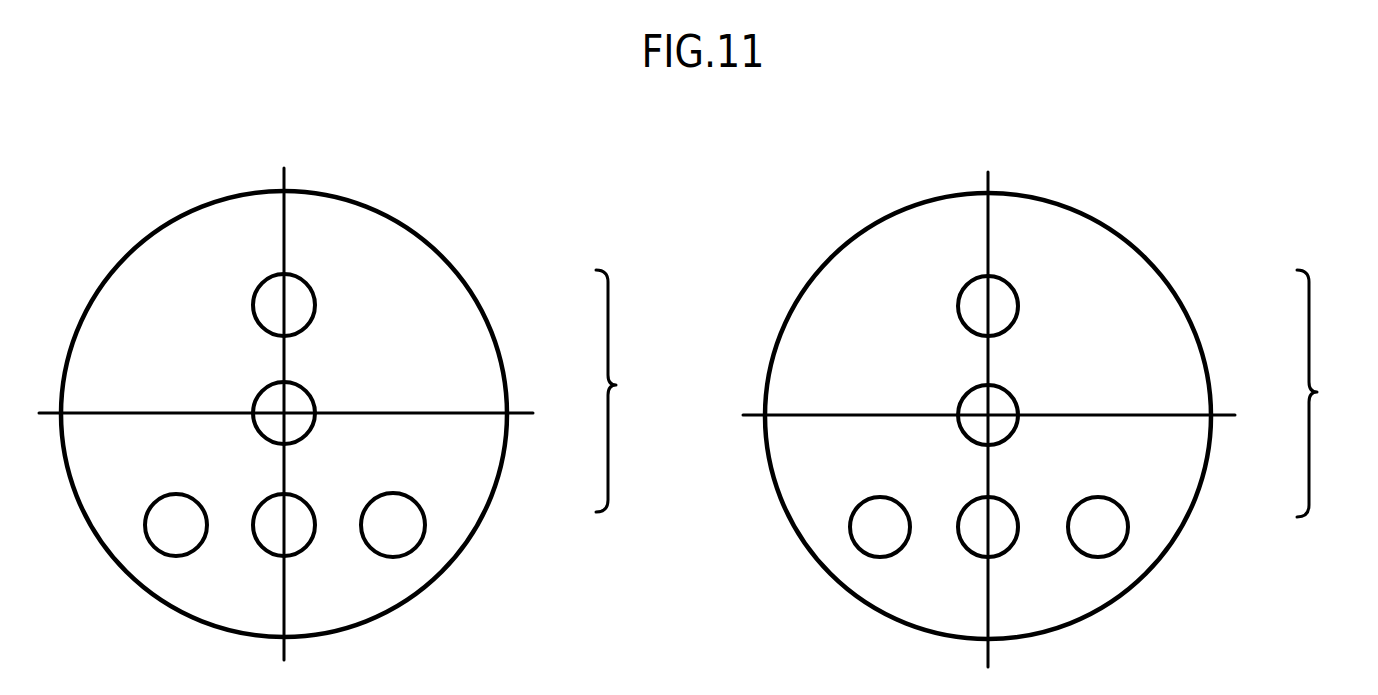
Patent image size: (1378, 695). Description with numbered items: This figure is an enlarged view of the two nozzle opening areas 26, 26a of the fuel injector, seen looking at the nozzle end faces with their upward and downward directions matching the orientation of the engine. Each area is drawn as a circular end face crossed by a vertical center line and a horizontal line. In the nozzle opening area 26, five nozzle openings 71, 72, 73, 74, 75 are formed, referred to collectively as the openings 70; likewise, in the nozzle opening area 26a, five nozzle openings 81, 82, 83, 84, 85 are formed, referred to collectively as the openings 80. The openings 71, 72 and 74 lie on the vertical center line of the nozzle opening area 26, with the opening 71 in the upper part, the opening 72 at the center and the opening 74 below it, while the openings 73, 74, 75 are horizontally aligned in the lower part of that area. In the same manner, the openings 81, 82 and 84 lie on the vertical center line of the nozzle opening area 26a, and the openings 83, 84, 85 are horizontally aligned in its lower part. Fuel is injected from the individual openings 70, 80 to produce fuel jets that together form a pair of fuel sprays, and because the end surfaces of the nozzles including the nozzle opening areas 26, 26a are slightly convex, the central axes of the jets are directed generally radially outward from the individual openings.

The nozzle opening area 26 is at (365, 205).
The nozzle opening area 26a is at (1072, 210).
The openings 70 is at (625, 391).
The nozzle opening 71 is at (315, 305).
The nozzle opening 72 is at (310, 397).
The nozzle opening 73 is at (203, 503).
The nozzle opening 74 is at (302, 495).
The nozzle opening 75 is at (428, 528).
The openings 80 is at (1326, 393).
The nozzle opening 81 is at (1018, 306).
The nozzle opening 82 is at (1015, 402).
The nozzle opening 83 is at (910, 500).
The nozzle opening 84 is at (1007, 497).
The nozzle opening 85 is at (1130, 533).